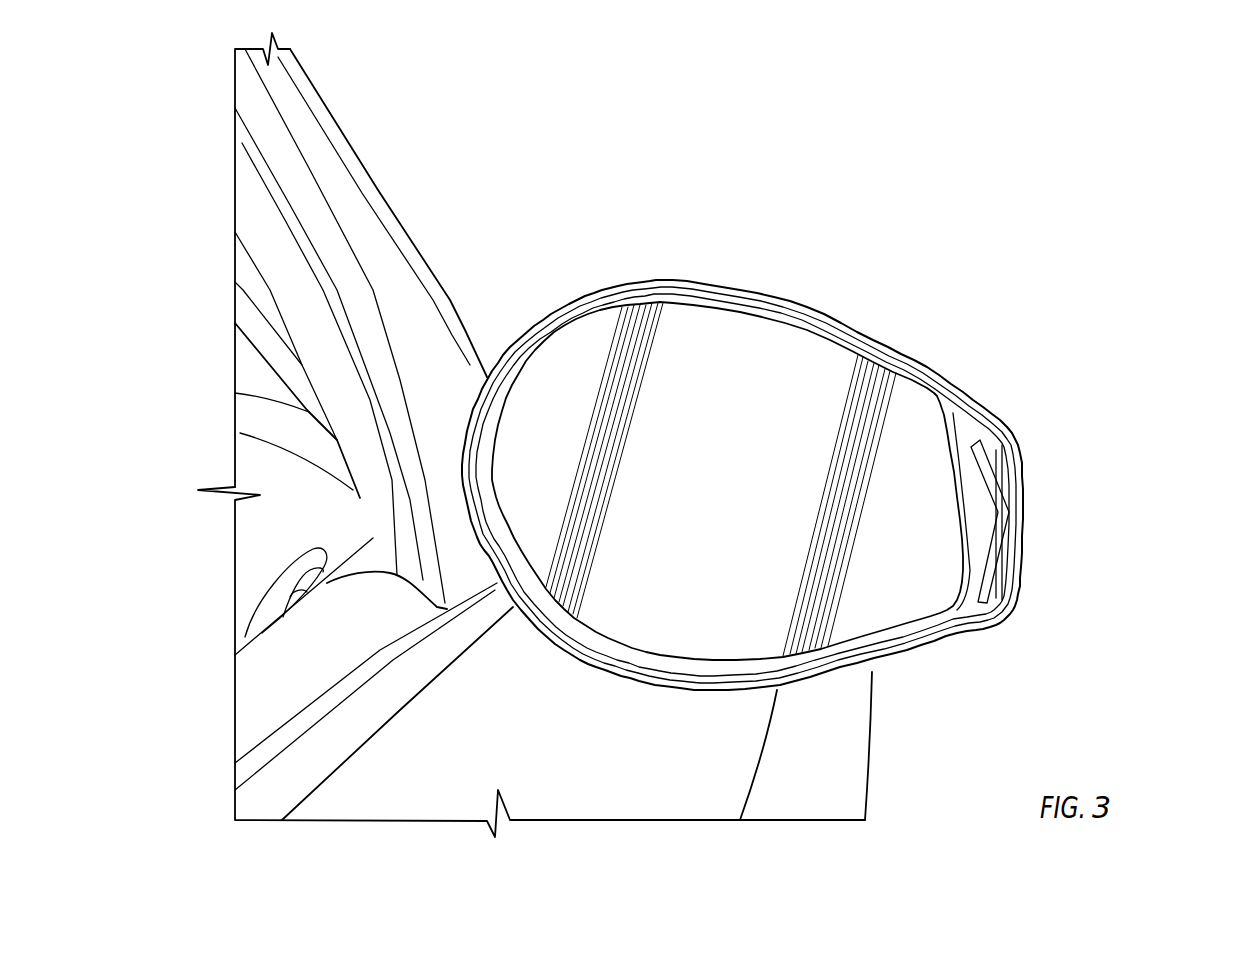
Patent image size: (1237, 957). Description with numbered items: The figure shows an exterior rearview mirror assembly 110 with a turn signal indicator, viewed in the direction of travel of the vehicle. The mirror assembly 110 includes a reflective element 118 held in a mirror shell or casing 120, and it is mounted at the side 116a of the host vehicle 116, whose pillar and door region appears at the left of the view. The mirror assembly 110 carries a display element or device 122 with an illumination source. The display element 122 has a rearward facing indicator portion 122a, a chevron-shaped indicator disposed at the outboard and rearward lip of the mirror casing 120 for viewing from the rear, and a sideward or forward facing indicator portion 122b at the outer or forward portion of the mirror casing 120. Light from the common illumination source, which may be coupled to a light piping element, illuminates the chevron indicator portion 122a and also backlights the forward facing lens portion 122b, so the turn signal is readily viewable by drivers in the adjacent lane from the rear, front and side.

The exterior rearview mirror assembly 110 is at (431, 606).
The host vehicle 116 is at (237, 448).
The side of host vehicle 116a is at (430, 645).
The reflective element 118 is at (727, 505).
The mirror casing 120 is at (882, 672).
The display element 122 is at (1052, 560).
The rearward facing indicator portion 122a is at (988, 580).
The sideward/forward facing indicator portion 122b is at (1023, 503).